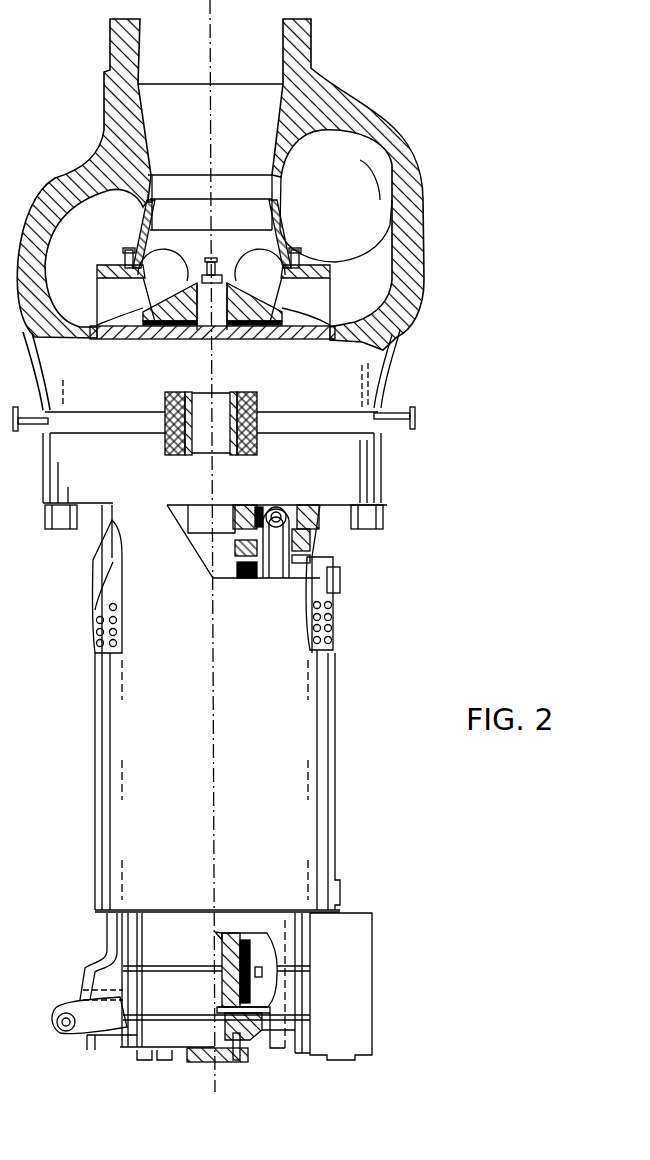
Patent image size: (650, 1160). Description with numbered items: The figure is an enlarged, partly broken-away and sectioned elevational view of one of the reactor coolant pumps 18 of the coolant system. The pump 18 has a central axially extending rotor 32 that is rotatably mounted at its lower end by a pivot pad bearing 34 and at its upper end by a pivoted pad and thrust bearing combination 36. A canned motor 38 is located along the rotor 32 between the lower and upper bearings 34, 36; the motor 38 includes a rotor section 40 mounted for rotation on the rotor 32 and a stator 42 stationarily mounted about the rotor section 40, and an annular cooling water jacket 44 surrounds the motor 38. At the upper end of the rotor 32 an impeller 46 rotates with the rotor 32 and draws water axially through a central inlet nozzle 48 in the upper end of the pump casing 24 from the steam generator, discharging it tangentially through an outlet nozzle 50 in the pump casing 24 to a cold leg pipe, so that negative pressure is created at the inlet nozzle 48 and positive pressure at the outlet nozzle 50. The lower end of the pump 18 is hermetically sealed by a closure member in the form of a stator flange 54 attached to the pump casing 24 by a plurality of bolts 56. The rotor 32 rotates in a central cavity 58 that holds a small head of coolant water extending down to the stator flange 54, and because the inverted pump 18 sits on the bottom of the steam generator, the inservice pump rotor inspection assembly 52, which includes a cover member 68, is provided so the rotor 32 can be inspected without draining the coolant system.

The reactor coolant pump 18 is at (385, 83).
The pump casing 24 is at (336, 763).
The rotor 32 is at (250, 510).
The pivot pad bearing 34 is at (250, 968).
The pivoted pad and thrust bearing combination 36 is at (262, 402).
The canned motor 38 is at (312, 553).
The rotor section 40 is at (234, 568).
The stator 42 is at (312, 545).
The annular cooling water jacket 44 is at (94, 644).
The impeller 46 is at (253, 258).
The inlet nozzle 48 is at (104, 88).
The outlet nozzle 50 is at (360, 160).
The inservice pump rotor inspection assembly 52 is at (237, 1065).
The stator flange 54 is at (255, 1033).
The bolts 56 is at (170, 1058).
The central cavity 58 is at (282, 505).
The cover member 68 is at (203, 1063).